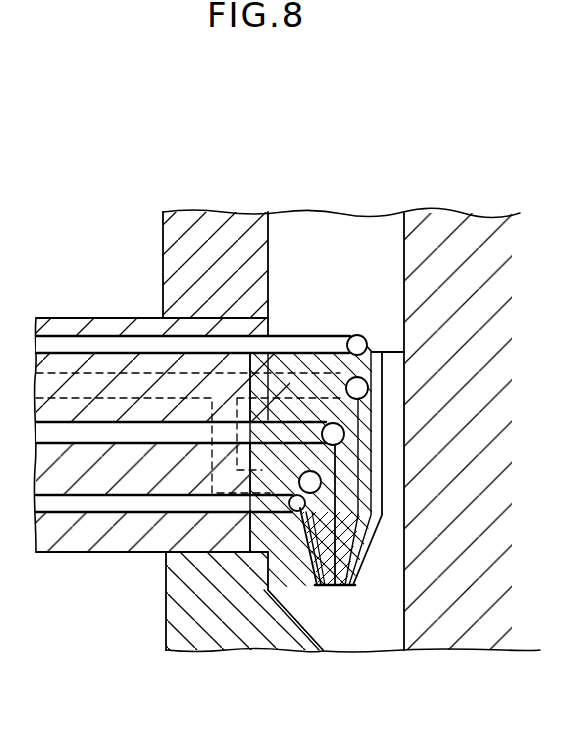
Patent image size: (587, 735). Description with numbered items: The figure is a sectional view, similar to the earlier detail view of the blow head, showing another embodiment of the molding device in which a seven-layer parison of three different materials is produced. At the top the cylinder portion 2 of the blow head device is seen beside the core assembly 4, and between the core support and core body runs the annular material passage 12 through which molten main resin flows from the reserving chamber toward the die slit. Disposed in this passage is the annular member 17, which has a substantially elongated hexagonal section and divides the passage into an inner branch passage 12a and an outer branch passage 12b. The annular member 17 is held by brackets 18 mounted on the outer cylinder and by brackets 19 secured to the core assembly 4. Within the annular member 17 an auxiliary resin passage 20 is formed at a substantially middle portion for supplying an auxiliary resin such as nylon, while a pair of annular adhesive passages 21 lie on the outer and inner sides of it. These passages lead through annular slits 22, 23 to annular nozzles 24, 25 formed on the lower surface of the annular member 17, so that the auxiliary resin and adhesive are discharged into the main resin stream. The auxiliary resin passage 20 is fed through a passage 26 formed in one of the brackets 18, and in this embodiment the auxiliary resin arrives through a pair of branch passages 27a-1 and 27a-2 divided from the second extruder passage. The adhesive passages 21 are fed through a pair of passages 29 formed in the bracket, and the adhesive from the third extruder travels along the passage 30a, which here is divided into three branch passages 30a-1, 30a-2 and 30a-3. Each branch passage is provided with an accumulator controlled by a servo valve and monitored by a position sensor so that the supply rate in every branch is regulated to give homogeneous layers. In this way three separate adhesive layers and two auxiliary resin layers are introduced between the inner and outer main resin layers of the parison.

The cylinder portion 2 is at (170, 258).
The core assembly 4 is at (483, 247).
The annular material passage 12 is at (316, 267).
The inner branch passage 12a is at (390, 543).
The outer branch passage 12b is at (288, 545).
The annular member 17 is at (383, 390).
The brackets 18 is at (277, 353).
The brackets 19 is at (395, 360).
The auxiliary resin passage 20 is at (360, 345).
The annular adhesive passages 21 is at (362, 377).
The annular slit 22 is at (358, 473).
The annular slits 23 is at (362, 455).
The annular nozzle 24 is at (334, 588).
The annular nozzles 25 is at (342, 587).
The passage 26 is at (317, 393).
The branch passage 27a-1 is at (332, 347).
The branch passage 27a-2 is at (262, 523).
The passages 29 is at (277, 393).
The passage 30a is at (83, 387).
The branch passage 30a-1 is at (122, 342).
The branch passage 30a-2 is at (100, 503).
The branch passage 30a-3 is at (97, 440).